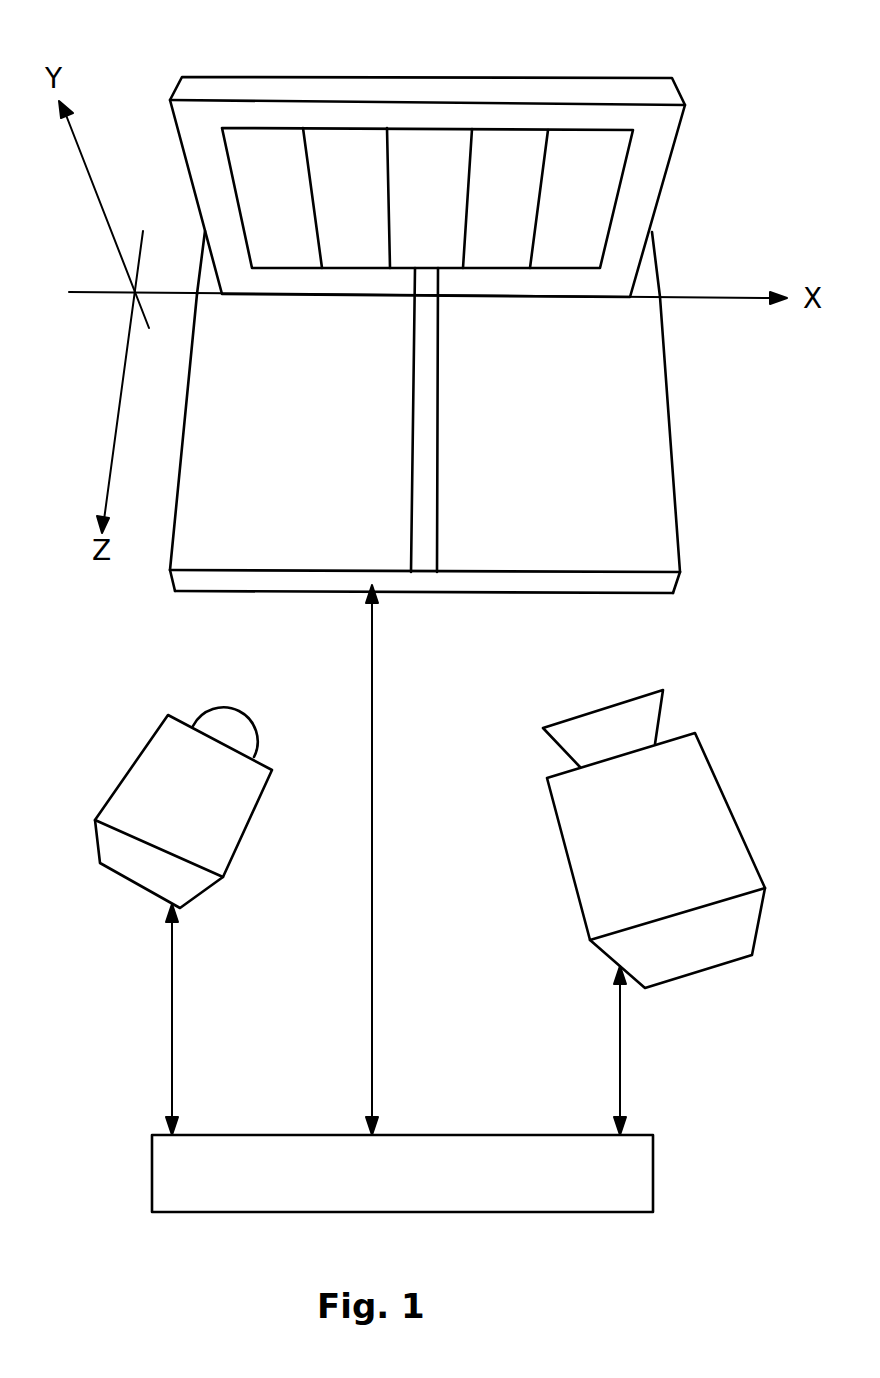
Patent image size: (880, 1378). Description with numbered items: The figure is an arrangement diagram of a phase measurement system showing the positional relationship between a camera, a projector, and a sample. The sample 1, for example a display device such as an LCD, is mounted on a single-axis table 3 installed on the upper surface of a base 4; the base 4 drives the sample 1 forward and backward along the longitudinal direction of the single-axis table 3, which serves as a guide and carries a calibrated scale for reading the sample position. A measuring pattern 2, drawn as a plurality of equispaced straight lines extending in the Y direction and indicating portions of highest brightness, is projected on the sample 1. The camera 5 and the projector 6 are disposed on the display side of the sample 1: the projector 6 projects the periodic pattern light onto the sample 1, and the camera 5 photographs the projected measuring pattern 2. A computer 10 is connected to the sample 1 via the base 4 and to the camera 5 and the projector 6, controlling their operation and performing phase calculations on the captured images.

The sample 1 is at (237, 92).
The measuring pattern 2 is at (388, 172).
The single-axis table 3 is at (422, 560).
The base 4 is at (650, 497).
The camera 5 is at (230, 834).
The projector 6 is at (725, 836).
The computer 10 is at (653, 1177).